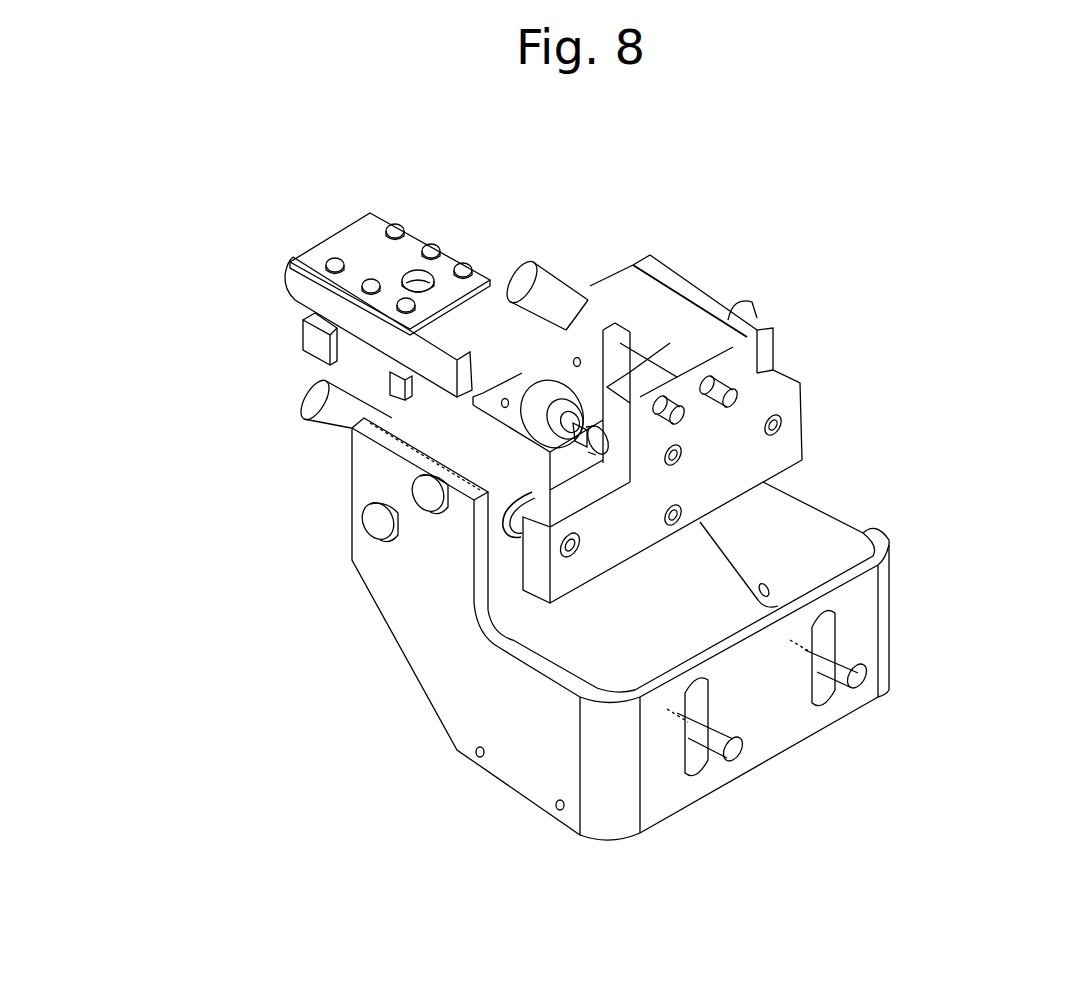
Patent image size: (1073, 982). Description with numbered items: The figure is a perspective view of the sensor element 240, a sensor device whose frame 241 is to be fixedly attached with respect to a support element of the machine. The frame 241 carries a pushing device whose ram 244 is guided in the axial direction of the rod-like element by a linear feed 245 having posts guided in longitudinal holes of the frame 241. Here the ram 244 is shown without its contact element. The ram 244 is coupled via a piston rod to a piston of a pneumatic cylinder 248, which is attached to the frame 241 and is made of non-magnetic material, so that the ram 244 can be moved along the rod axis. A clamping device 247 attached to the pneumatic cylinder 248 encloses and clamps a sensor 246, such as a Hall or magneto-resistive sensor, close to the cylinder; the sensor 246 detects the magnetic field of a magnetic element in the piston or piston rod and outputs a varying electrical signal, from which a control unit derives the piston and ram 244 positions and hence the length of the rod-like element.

The sensor element 240 is at (906, 227).
The frame 241 is at (890, 597).
The ram 244 is at (790, 398).
The linear feed 245 is at (313, 418).
The sensor 246 is at (434, 275).
The clamping device 247 is at (320, 259).
The pneumatic cylinder 248 is at (283, 291).